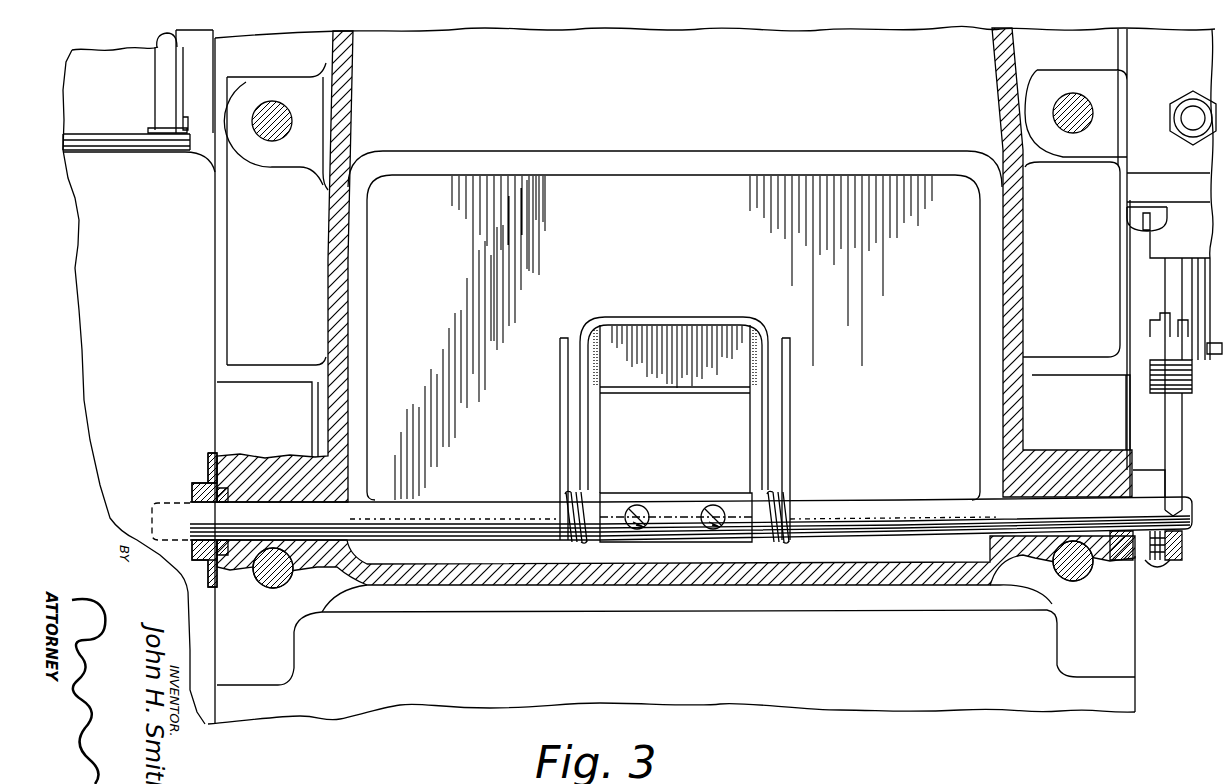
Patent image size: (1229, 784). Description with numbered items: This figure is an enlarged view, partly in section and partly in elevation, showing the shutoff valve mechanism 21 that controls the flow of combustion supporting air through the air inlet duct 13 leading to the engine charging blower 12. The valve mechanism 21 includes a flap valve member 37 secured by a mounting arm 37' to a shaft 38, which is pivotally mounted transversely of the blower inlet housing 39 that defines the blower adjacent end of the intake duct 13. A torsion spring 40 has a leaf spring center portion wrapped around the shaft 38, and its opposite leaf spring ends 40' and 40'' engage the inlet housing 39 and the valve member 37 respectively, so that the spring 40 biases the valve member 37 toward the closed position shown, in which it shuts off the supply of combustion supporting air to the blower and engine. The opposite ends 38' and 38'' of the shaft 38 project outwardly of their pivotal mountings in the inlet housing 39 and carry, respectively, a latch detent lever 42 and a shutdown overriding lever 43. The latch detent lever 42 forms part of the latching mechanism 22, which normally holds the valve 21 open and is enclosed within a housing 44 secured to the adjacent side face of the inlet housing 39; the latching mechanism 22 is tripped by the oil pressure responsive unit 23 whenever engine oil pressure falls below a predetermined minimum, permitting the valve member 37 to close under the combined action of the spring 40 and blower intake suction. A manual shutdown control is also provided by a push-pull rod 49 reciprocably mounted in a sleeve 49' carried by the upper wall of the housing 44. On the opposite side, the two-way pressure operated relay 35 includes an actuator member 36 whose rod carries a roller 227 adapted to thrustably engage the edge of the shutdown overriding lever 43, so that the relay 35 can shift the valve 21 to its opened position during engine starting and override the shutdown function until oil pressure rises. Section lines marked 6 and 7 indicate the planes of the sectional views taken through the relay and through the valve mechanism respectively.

The engine charging blower 12 is at (455, 698).
The air inlet duct 13 is at (988, 66).
The air shutoff valve 21 is at (838, 174).
The latching mechanism 22 is at (118, 460).
The oil pressure responsive unit 23 is at (90, 71).
The two-way pressure operated relay 35 is at (1171, 152).
The actuator member 36 is at (1190, 294).
The flap valve member 37 is at (673, 312).
The mounting arm 37' is at (641, 490).
The shaft 38 is at (691, 506).
The shaft end 38' is at (169, 507).
The shaft end 38'' is at (1150, 493).
The blower inlet housing 39 is at (337, 238).
The torsion spring 40 is at (658, 526).
The leaf spring end 40' is at (681, 439).
The leaf spring end 40'' is at (680, 390).
The latch detent lever 42 is at (208, 568).
The shutdown overriding lever 43 is at (1168, 560).
The housing 44 is at (98, 232).
The push-pull rod 49 is at (192, 81).
The sleeve 49' is at (180, 83).
The roller 227 is at (1172, 370).
The section line 6- 6 is at (1212, 65).
The section line 7- 7 is at (696, 119).